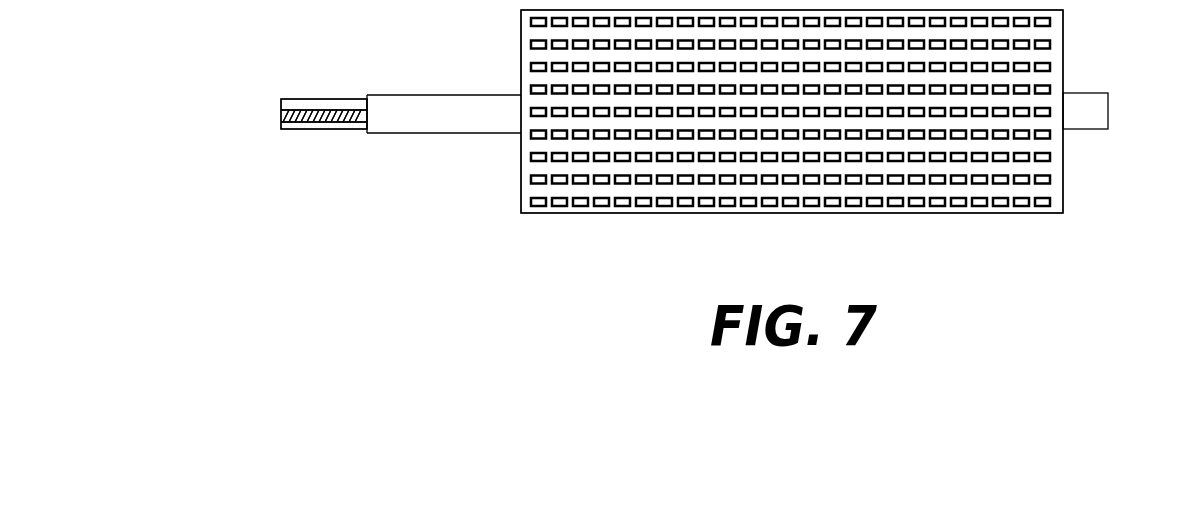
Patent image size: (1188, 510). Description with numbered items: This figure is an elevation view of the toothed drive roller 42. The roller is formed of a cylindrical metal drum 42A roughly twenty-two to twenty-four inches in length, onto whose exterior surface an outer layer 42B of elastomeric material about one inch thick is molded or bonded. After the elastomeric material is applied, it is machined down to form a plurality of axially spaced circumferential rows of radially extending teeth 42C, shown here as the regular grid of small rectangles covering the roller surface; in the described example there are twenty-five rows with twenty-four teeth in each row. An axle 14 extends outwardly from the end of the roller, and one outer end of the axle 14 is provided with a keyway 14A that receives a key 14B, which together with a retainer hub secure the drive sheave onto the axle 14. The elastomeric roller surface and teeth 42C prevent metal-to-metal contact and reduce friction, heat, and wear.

The axle 14 is at (403, 127).
The keyway 14A is at (310, 117).
The key 14B is at (310, 117).
The toothed drive roller 42 is at (715, 164).
The cylindrical metal drum 42A is at (521, 197).
The outer layer of elastomeric material 42B is at (521, 197).
The teeth 42C is at (1050, 69).